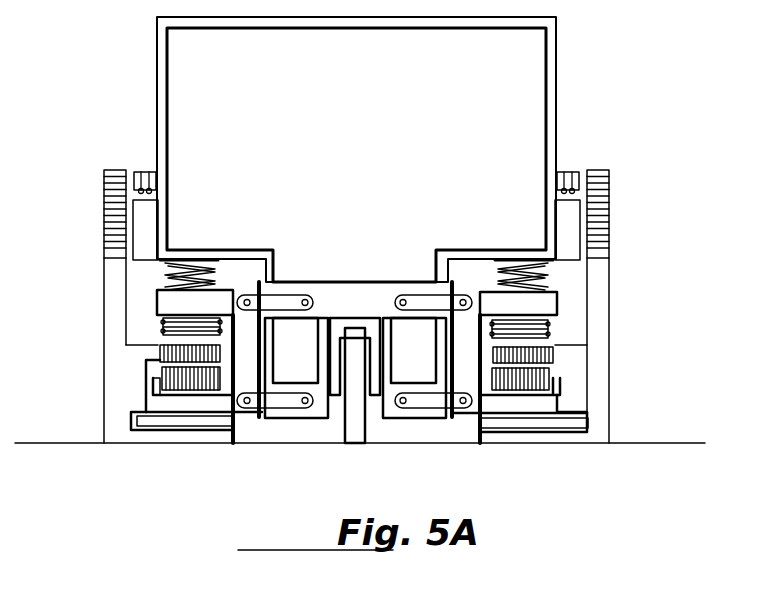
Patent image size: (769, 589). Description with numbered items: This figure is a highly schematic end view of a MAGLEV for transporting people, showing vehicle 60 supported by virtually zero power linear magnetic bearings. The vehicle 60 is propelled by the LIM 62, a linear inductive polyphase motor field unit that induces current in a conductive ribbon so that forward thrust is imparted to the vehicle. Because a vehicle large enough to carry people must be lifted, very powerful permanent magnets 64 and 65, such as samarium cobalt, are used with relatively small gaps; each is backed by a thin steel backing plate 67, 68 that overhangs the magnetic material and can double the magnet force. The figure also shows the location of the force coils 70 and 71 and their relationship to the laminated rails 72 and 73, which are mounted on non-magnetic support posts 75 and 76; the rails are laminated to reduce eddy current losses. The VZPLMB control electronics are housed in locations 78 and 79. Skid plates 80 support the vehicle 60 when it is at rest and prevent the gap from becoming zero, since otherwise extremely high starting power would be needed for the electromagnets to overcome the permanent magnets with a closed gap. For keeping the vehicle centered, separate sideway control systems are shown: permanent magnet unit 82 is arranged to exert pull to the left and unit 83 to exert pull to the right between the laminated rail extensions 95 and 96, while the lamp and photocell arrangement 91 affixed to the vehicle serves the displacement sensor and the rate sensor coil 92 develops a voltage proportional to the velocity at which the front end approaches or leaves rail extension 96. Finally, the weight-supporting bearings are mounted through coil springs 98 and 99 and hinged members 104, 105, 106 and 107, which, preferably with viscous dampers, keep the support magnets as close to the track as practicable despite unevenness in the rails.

The vehicle 60 is at (563, 75).
The LIM 62 is at (355, 329).
The permanent magnet 64 is at (158, 368).
The permanent magnet 65 is at (549, 375).
The steel backing plate 67 is at (153, 388).
The steel backing plate 68 is at (560, 387).
The force coil 70 is at (163, 326).
The force coil 71 is at (550, 332).
The laminated rail 72 is at (160, 348).
The laminated rail 73 is at (555, 357).
The non-magnetic support post 75 is at (105, 432).
The non-magnetic support post 76 is at (609, 405).
The control electronics location 78 is at (313, 316).
The control electronics location 79 is at (390, 312).
The skid plate 80 is at (145, 420).
The permanent magnet 82 is at (139, 232).
The permanent magnet 83 is at (573, 237).
The lamp and photocell arrangement 91 is at (140, 172).
The sensing coil 92 is at (573, 173).
The laminated rail extension 95 is at (112, 188).
The laminated rail extension 96 is at (607, 199).
The coil spring 98 is at (219, 272).
The coil spring 99 is at (527, 270).
The hinged member 104 is at (289, 304).
The hinged member 105 is at (285, 404).
The hinged member 106 is at (425, 308).
The hinged member 107 is at (423, 404).